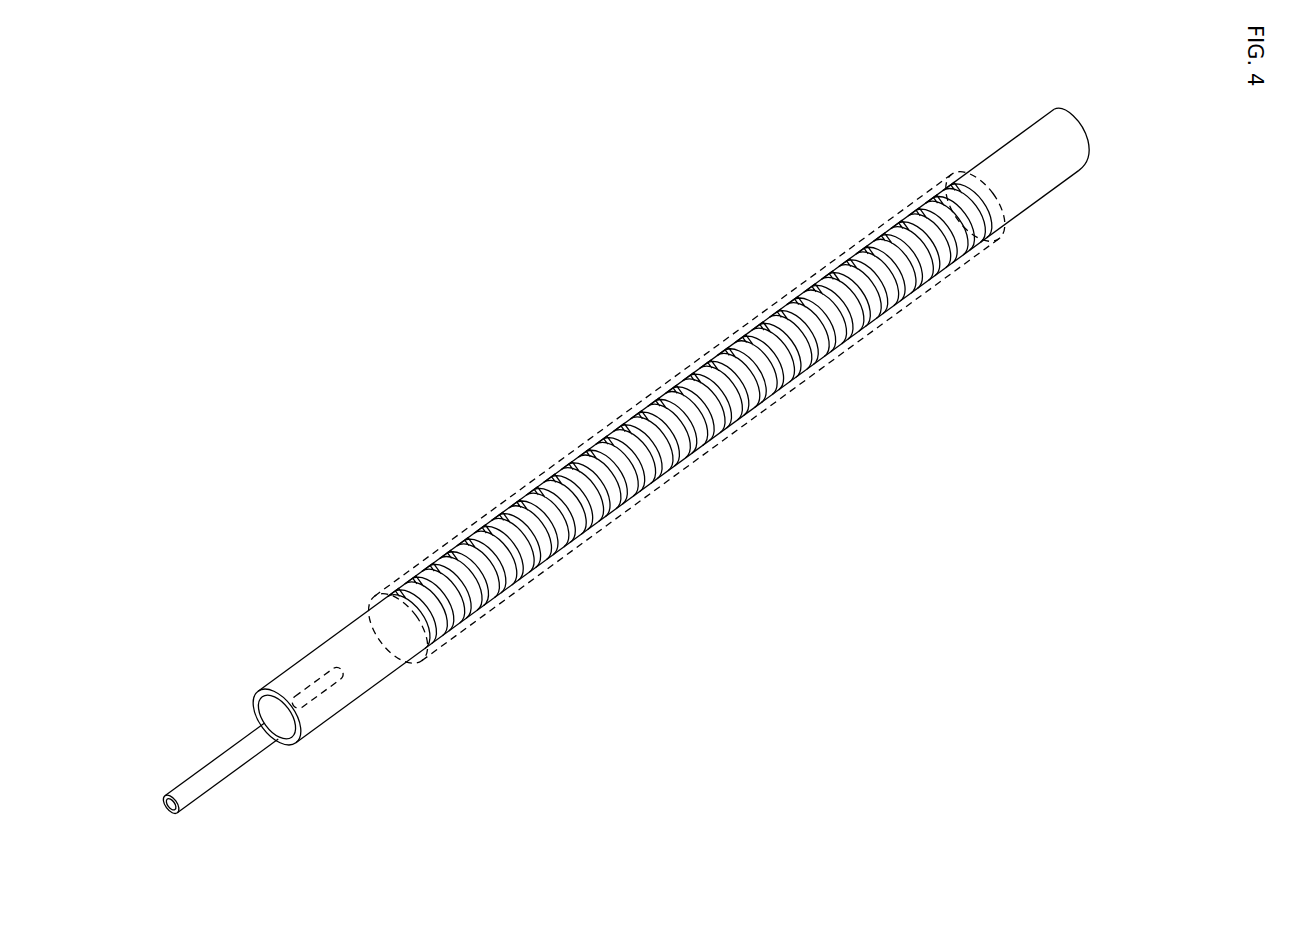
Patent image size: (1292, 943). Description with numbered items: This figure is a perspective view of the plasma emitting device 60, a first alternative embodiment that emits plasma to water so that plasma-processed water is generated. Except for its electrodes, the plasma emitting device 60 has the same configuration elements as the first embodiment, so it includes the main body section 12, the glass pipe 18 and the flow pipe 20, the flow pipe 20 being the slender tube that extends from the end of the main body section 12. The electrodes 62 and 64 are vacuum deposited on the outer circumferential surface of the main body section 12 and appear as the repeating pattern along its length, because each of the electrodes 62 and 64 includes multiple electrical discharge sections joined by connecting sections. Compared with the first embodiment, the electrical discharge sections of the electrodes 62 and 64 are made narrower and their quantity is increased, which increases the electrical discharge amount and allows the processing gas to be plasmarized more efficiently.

The main body section 12 is at (1037, 172).
The glass pipe 18 is at (776, 305).
The flow pipe 20 is at (233, 763).
The plasma emitting device 60 is at (607, 203).
The electrode 62 is at (390, 575).
The electrode 64 is at (930, 293).